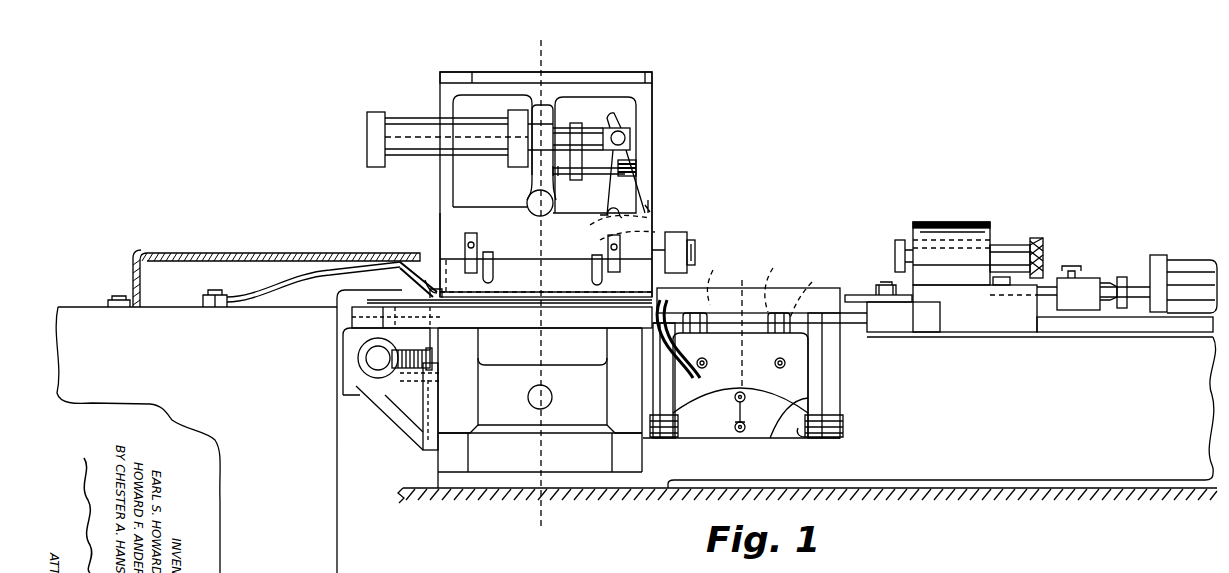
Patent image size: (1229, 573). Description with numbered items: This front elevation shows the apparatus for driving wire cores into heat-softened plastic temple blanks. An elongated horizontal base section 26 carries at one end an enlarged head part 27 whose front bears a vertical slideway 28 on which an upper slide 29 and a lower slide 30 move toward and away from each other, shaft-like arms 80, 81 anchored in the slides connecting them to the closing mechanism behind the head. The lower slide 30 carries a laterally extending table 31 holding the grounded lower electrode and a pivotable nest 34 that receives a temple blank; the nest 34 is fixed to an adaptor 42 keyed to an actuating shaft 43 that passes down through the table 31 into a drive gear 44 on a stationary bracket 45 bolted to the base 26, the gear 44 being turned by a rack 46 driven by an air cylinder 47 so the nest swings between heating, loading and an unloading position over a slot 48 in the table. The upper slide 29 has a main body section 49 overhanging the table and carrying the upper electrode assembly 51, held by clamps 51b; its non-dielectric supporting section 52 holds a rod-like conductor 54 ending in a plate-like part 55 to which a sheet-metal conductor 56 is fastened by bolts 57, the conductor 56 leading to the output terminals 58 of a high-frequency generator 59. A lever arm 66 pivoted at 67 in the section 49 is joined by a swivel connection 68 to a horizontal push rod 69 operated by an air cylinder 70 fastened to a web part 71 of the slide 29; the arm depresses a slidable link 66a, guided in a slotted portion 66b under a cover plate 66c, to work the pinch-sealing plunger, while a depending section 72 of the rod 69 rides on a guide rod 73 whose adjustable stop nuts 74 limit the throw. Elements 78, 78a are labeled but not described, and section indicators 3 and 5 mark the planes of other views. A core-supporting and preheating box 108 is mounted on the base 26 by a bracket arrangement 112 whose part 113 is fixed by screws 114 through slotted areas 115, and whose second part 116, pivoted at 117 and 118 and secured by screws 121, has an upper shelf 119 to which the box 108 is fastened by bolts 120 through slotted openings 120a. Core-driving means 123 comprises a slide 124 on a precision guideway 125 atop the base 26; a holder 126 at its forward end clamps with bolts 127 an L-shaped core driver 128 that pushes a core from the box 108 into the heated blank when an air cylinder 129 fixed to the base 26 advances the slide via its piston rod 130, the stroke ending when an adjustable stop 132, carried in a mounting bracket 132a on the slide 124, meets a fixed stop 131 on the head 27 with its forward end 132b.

The section line 3- 3 is at (556, 47).
The section line 5- 5 is at (730, 275).
The base section 26 is at (979, 478).
The head part 27 is at (429, 208).
The vertical slideway 28 is at (458, 452).
The upper slide 29 is at (648, 143).
The lower slide 30 is at (618, 400).
The table 31 is at (548, 326).
The nest 34 is at (457, 297).
The adaptor 42 is at (365, 279).
The actuating shaft 43 is at (338, 332).
The drive gear 44 is at (433, 358).
The stationary bracket 45 is at (437, 410).
The rack 46 is at (374, 370).
The air cylinder 47 is at (358, 352).
The slot 48 is at (435, 316).
The main body section 49 is at (440, 230).
The upper electrode assembly 51 is at (541, 280).
The clamps 51b is at (464, 248).
The main supporting section 52 is at (532, 265).
The rod-like electrical conductor 54 is at (430, 283).
The plate-like part 55 is at (414, 294).
The high-frequency current carrying conductor 56 is at (296, 256).
The bolts 57 is at (400, 262).
The output terminals 58 is at (216, 305).
The high-frequency electrical energy generator 59 is at (337, 529).
The lever arm 66 is at (635, 185).
The link 66a is at (655, 217).
The slotted portion 66b is at (655, 233).
The cover plate 66c is at (650, 210).
The pivot 67 is at (618, 212).
The swivel connection 68 is at (625, 134).
The push rod 69 is at (560, 130).
The air cylinder 70 is at (416, 120).
The web part 71 is at (545, 105).
The depending section 72 is at (570, 160).
The guide rod 73 is at (594, 176).
The stop nuts 74 is at (636, 162).
The pin 78 is at (493, 270).
The pin 78a is at (590, 277).
The shaft-like arm 80 is at (527, 203).
The shaft-like arm 81 is at (552, 397).
The core-supporting and preheating box 108 is at (791, 287).
The bracket arrangement 112 is at (800, 390).
The part 113 is at (838, 400).
The screws 114 is at (720, 428).
The slotted areas 115 is at (735, 400).
The second part 116 is at (780, 440).
The pivot 117 is at (680, 440).
The pivot 118 is at (800, 440).
The upper shelf 119 is at (748, 325).
The bolts 120 is at (767, 285).
The slotted openings 120a is at (767, 282).
The screws 121 is at (705, 366).
The core-driving means 123 is at (1006, 274).
The slide 124 is at (988, 325).
The guideway 125 is at (1062, 325).
The holder 126 is at (892, 300).
The bolts 127 is at (882, 286).
The core driver 128 is at (850, 296).
The air cylinder 129 is at (1180, 262).
The piston rod 130 is at (1125, 285).
The fixed stop 131 is at (668, 272).
The adjustable stop 132 is at (900, 238).
The mounting bracket 132a is at (958, 230).
The forward end 132b is at (896, 244).